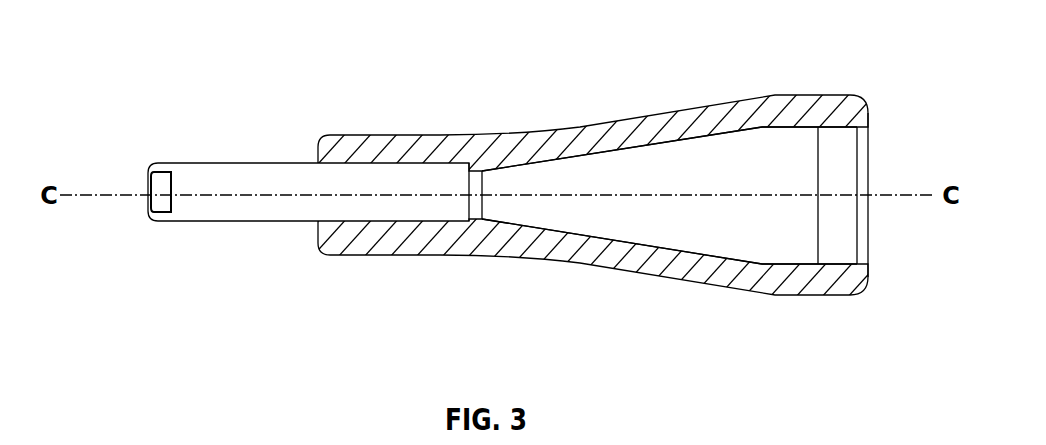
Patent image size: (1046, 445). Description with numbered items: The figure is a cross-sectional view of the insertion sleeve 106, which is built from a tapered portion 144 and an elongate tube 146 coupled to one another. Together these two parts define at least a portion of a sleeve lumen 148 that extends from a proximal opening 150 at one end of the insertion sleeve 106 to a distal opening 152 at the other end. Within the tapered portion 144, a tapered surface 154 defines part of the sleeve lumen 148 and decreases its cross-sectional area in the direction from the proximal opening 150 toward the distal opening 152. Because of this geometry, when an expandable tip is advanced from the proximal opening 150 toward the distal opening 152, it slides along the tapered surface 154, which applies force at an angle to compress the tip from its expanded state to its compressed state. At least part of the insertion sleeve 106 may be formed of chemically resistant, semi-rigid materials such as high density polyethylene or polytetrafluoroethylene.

The insertion sleeve 106 is at (168, 322).
The tapered portion 144 is at (629, 146).
The elongate tube 146 is at (207, 163).
The sleeve lumen 148 is at (551, 180).
The proximal opening 150 is at (871, 233).
The distal opening 152 is at (147, 181).
The tapered surface 154 is at (762, 130).